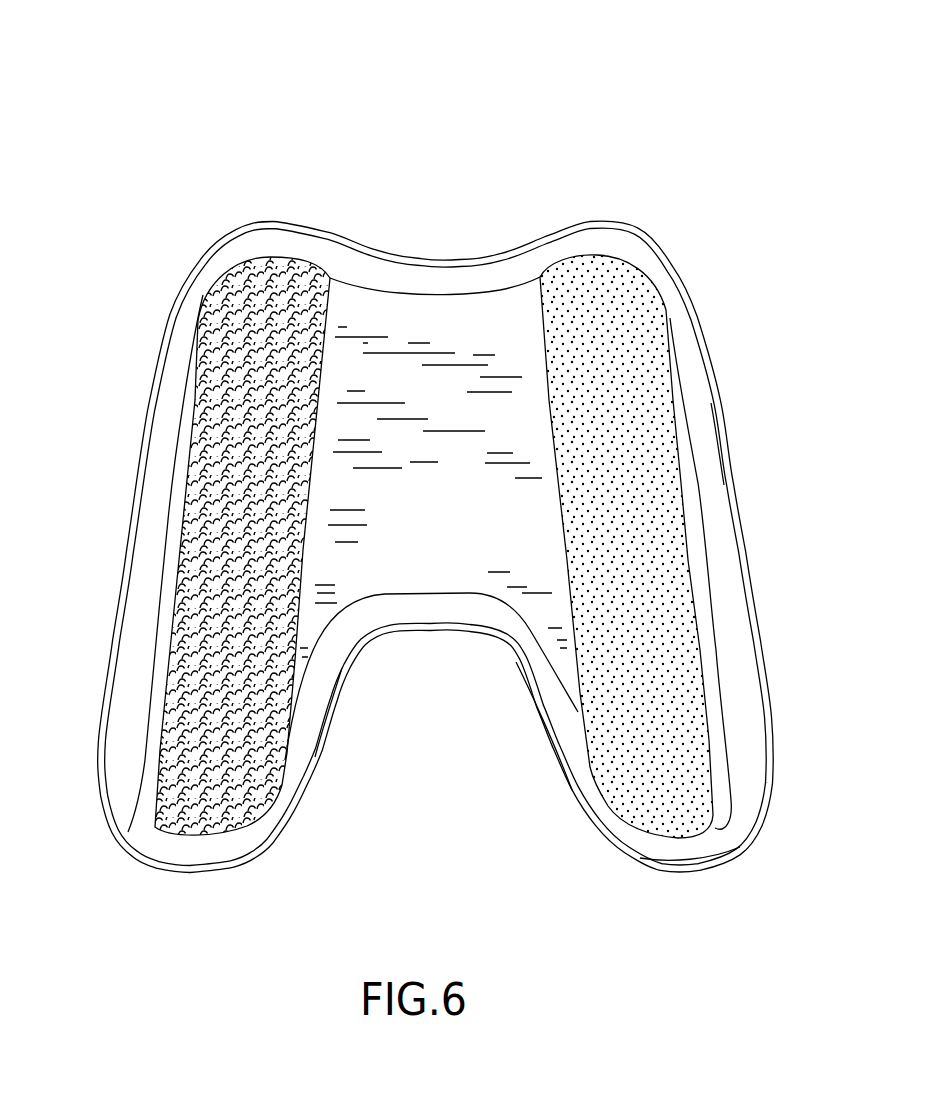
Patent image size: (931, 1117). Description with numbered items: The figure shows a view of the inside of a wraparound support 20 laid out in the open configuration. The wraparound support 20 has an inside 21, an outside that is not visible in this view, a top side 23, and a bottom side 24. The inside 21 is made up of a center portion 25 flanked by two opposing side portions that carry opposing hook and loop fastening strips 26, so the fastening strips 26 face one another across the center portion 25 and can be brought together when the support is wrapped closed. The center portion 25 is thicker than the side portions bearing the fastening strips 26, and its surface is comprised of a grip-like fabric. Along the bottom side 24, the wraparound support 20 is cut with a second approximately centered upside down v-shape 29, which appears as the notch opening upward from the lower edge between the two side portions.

The wraparound support 20 is at (276, 137).
The inside 21 is at (672, 287).
The top side 23 is at (638, 228).
The bottom side 24 is at (698, 870).
The center portion 25 is at (425, 505).
The opposing hook and loop fastening strips 26 is at (242, 497).
The second approximately centered upside down v-shape 29 is at (467, 632).